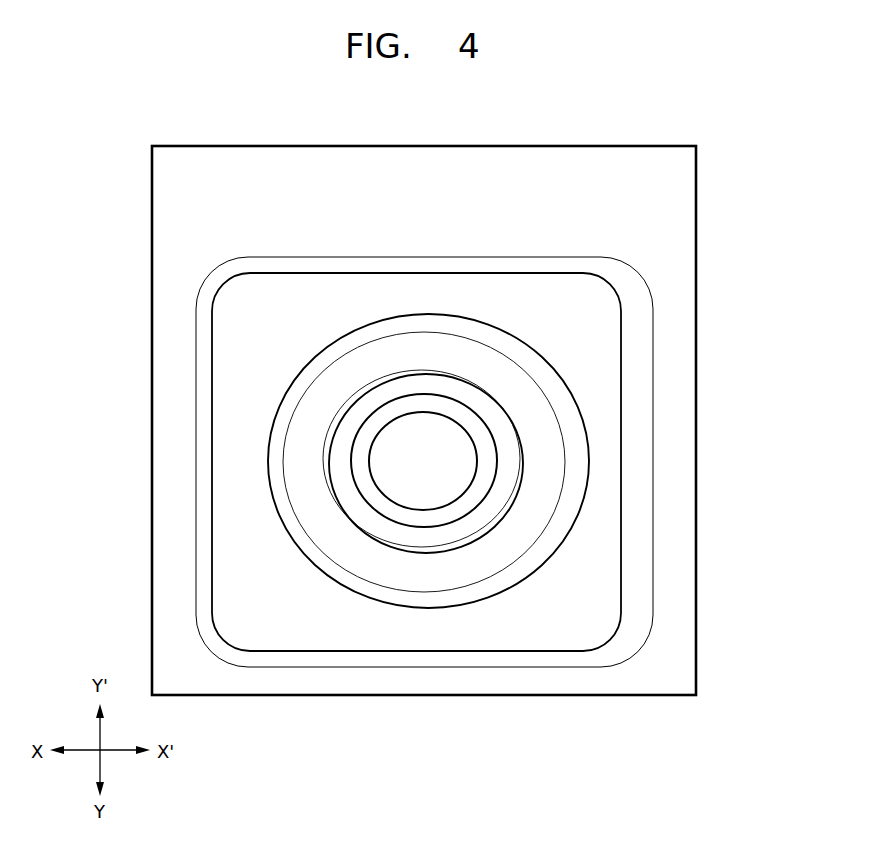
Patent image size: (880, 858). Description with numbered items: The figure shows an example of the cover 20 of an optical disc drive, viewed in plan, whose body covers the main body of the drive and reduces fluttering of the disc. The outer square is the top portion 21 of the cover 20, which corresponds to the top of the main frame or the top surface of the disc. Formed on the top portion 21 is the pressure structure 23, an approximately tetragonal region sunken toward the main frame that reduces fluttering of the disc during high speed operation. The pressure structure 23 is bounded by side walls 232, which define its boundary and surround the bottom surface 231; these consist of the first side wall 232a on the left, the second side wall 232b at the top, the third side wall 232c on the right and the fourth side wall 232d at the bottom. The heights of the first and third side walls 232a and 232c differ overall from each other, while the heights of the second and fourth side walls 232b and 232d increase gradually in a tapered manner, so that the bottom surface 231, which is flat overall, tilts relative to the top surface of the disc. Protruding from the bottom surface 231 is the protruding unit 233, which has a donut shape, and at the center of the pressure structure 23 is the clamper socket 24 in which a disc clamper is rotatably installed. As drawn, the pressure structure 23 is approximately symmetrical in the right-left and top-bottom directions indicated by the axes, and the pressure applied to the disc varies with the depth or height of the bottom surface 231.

The cover 20 is at (443, 423).
The top portion 21 is at (574, 207).
The pressure structure 23 is at (443, 472).
The clamper socket 24 is at (437, 469).
The bottom surface 231 is at (603, 436).
The side walls 232 is at (423, 472).
The first side wall 232a is at (205, 454).
The second side wall 232b is at (422, 265).
The third side wall 232c is at (639, 543).
The fourth side wall 232d is at (427, 658).
The protruding unit 233 is at (547, 481).